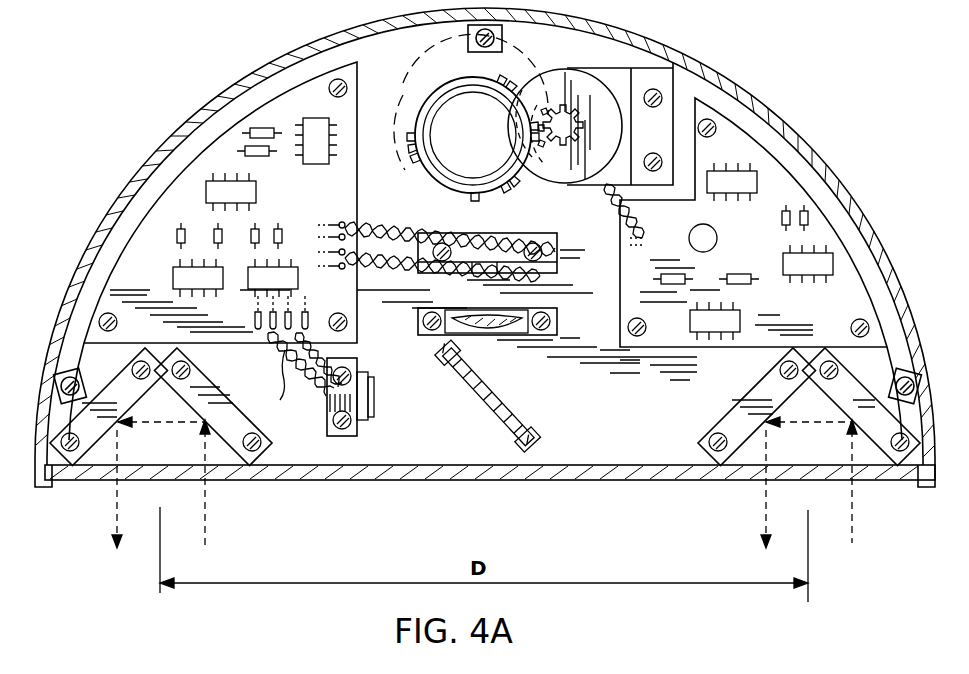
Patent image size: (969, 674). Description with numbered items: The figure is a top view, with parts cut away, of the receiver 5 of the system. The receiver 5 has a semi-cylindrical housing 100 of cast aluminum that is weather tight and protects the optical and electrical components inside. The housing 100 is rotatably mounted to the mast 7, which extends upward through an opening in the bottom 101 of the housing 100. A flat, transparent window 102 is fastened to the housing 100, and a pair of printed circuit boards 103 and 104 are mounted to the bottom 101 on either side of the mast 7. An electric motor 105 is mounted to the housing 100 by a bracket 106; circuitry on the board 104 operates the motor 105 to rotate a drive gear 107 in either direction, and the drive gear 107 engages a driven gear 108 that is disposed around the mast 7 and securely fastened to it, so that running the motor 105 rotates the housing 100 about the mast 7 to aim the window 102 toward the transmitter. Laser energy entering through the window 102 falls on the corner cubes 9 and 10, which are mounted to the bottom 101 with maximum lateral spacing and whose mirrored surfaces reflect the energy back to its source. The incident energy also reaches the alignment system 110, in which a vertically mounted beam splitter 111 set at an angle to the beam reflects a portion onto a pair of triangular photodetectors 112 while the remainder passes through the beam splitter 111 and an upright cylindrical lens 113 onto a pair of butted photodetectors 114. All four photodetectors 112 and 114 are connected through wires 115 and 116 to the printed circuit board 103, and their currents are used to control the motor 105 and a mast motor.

The receiver 5 is at (158, 138).
The mast 7 is at (432, 140).
The corner cube 9 is at (738, 434).
The corner cube 10 is at (228, 420).
The semi-cylindrical housing 100 is at (350, 33).
The bottom 101 is at (414, 66).
The transparent window 102 is at (396, 481).
The printed circuit board 103 is at (321, 207).
The printed circuit board 104 is at (767, 245).
The electric motor 105 is at (608, 72).
The bracket 106 is at (673, 70).
The drive gear 107 is at (560, 105).
The driven gear 108 is at (408, 135).
The alignment system 110 is at (536, 407).
The beam splitter 111 is at (480, 395).
The triangular photodetectors 112 is at (375, 393).
The cylindrical lens 113 is at (497, 336).
The butted photodetectors 114 is at (520, 292).
The wires 115 is at (451, 303).
The wires 116 is at (392, 228).